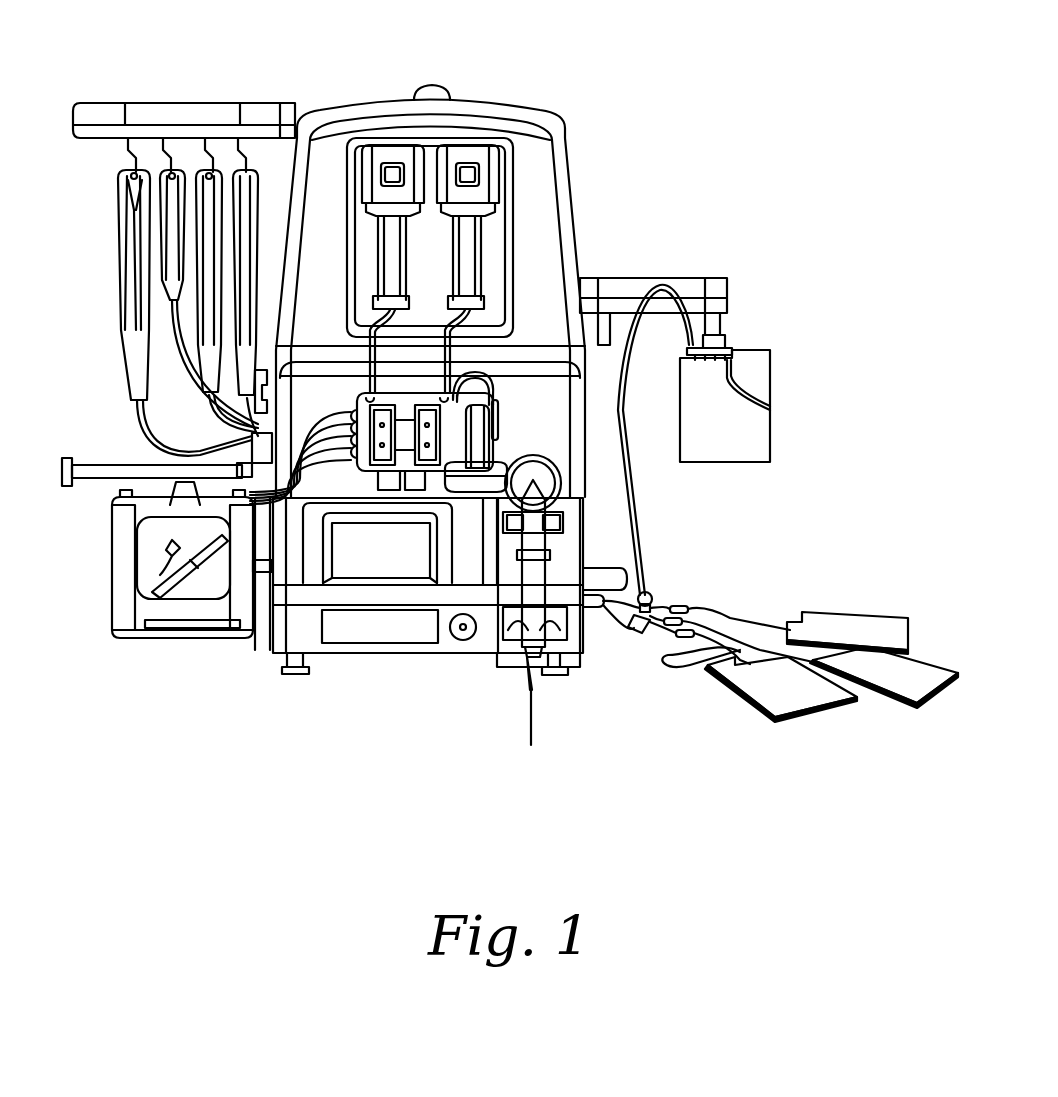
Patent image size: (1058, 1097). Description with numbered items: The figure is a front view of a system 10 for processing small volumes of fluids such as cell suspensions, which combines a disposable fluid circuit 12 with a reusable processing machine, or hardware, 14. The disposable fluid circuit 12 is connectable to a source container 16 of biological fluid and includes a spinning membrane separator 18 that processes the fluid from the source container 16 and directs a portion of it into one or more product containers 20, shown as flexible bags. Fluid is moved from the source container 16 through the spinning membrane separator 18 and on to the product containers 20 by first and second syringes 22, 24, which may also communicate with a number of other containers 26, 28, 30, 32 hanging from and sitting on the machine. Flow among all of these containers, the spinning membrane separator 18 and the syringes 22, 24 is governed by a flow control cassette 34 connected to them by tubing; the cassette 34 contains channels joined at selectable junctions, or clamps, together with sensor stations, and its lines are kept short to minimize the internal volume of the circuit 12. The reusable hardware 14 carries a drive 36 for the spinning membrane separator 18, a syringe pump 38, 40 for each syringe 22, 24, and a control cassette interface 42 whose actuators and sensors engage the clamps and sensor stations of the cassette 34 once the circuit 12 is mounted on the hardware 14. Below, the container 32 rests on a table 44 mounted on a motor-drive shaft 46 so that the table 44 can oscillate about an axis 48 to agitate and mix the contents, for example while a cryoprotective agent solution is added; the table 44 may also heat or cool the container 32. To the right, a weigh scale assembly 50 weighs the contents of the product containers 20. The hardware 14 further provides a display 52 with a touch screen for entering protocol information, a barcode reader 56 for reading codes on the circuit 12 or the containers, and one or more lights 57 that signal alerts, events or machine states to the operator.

The system 10 is at (697, 205).
The disposable fluid circuit 12 is at (122, 405).
The reusable processing machine 14 is at (604, 267).
The source container 16 is at (125, 303).
The spinning membrane separator 18 is at (487, 433).
The product containers 20 is at (763, 433).
The first syringe 22 is at (390, 233).
The second syringe 24 is at (470, 245).
The container 26 is at (248, 190).
The container 28 is at (206, 175).
The container 30 is at (168, 238).
The container 32 is at (156, 548).
The flow control cassette 34 is at (370, 477).
The drive 36 is at (470, 486).
The syringe pump 38 is at (387, 152).
The syringe pump 40 is at (473, 152).
The control cassette interface 42 is at (500, 408).
The table 44 is at (178, 612).
The motor-drive shaft 46 is at (262, 574).
The axis 48 is at (108, 568).
The weigh scale assembly 50 is at (742, 295).
The display 52 is at (386, 570).
The barcode reader 56 is at (548, 490).
The lights 57 is at (424, 84).